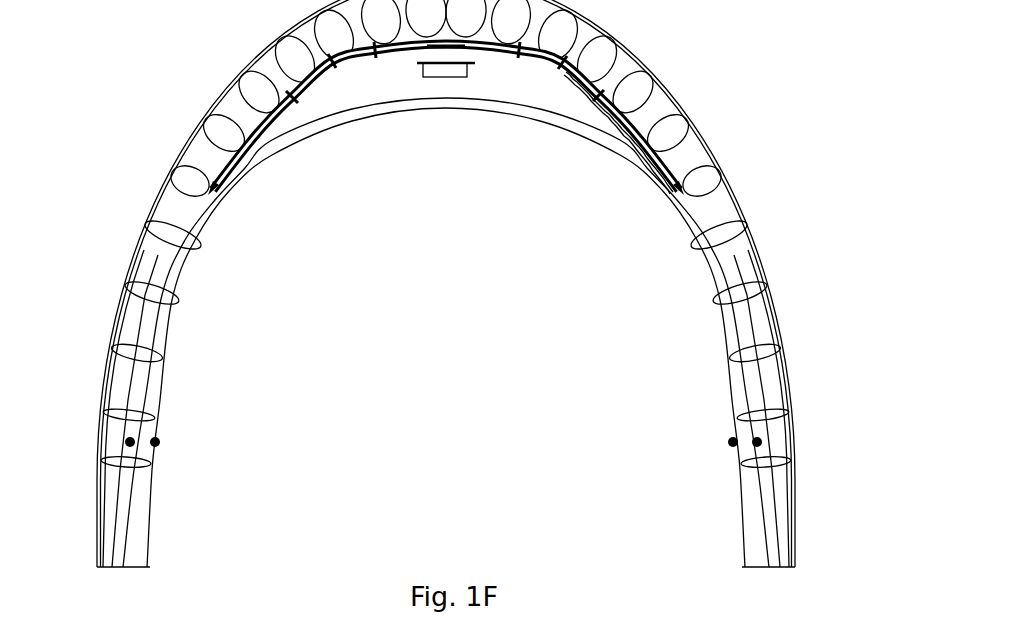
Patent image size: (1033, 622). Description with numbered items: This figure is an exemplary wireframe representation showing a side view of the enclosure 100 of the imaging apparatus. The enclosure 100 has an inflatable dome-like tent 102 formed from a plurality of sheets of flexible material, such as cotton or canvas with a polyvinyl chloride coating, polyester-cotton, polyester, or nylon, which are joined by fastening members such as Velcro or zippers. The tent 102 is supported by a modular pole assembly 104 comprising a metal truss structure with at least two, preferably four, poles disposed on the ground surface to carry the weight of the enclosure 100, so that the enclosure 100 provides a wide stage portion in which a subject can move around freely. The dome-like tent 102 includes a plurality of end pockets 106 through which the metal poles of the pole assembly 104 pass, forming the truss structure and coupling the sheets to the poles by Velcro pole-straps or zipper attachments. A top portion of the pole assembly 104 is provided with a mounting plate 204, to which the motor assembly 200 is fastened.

The enclosure 100 is at (150, 68).
The inflatable dome-like tent 102 is at (152, 207).
The modular pole assembly 104 is at (622, 133).
The end pockets 106 is at (522, 47).
The motor assembly 200 is at (440, 78).
The mounting plate 204 is at (415, 63).